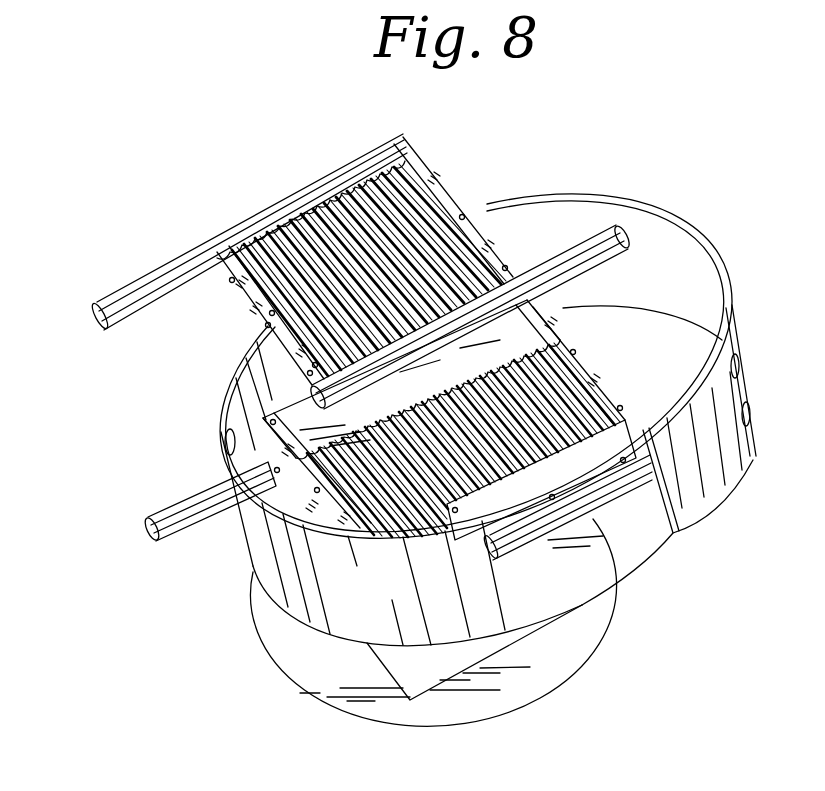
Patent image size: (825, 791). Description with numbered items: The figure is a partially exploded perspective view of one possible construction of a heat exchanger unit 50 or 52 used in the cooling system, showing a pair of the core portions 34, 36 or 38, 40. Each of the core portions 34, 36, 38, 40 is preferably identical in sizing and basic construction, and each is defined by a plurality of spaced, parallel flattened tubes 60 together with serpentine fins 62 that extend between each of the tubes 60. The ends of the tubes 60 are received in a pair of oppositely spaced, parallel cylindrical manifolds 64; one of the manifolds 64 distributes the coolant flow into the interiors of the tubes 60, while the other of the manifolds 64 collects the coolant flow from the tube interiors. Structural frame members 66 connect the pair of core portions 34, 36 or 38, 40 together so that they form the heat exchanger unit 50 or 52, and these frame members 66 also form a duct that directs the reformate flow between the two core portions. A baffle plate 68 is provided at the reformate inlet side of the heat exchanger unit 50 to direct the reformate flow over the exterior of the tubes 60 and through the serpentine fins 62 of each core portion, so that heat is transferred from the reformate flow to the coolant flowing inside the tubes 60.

The core portion 34 is at (432, 445).
The core portion 38 is at (432, 445).
The core portion 36 is at (391, 261).
The core portion 40 is at (437, 203).
The heat exchanger unit 50 is at (488, 460).
The heat exchanger unit 52 is at (610, 353).
The flattened tubes 60 is at (248, 246).
The serpentine fins 62 is at (262, 255).
The cylindrical manifolds 64 is at (160, 271).
The structural frame members 66 is at (474, 354).
The baffle plate 68 is at (580, 643).